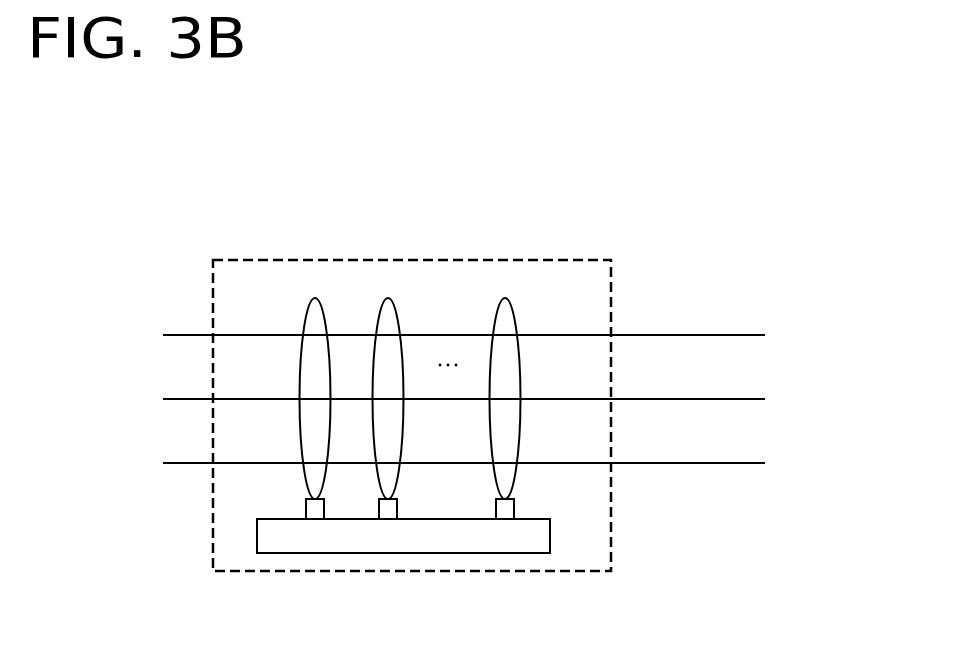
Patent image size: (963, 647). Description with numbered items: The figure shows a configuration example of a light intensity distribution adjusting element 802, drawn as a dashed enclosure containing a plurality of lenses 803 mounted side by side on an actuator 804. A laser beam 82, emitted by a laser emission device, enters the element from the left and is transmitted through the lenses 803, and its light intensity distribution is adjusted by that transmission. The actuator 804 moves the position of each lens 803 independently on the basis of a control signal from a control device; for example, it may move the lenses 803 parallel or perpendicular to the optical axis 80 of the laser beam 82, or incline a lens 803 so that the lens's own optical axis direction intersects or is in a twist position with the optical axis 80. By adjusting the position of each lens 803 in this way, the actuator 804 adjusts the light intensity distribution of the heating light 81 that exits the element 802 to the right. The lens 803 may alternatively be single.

The optical axis 80 is at (738, 368).
The heating light 81 is at (738, 305).
The laser beam 82 is at (183, 335).
The light intensity distribution adjusting element 802 is at (615, 207).
The lens 803 is at (314, 298).
The actuator 804 is at (470, 553).